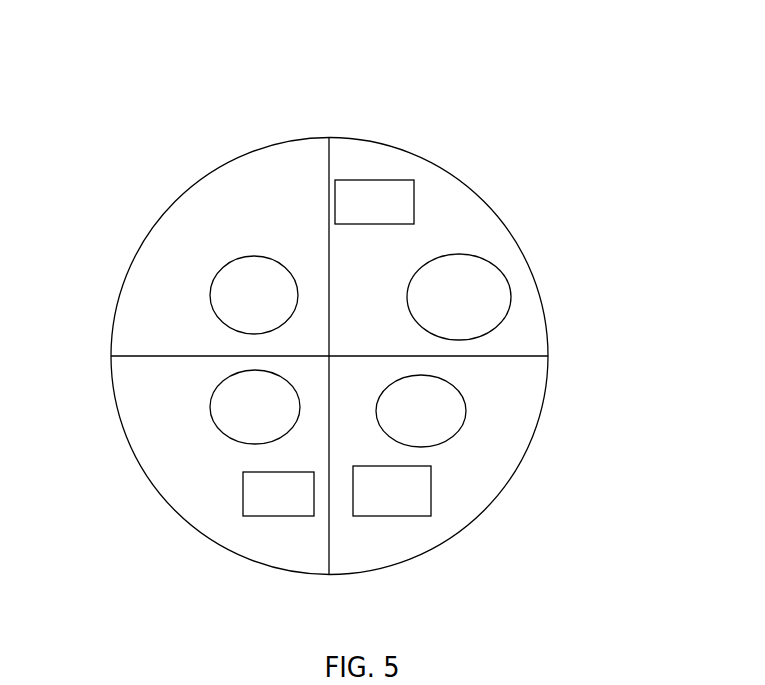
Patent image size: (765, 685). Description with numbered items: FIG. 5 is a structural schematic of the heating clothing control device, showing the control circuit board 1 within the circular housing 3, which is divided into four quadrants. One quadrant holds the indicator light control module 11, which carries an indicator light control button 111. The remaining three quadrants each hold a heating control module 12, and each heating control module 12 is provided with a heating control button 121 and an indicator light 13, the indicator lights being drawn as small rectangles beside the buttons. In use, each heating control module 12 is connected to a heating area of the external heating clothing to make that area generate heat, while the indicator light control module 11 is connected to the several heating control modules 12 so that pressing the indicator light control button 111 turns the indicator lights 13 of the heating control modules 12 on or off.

The control circuit board 1 is at (165, 287).
The housing 3 is at (170, 223).
The indicator light control module 11 is at (254, 171).
The heating control module 12 is at (377, 397).
The indicator light 13 is at (337, 348).
The indicator light control button 111 is at (254, 295).
The heating control button 121 is at (360, 350).